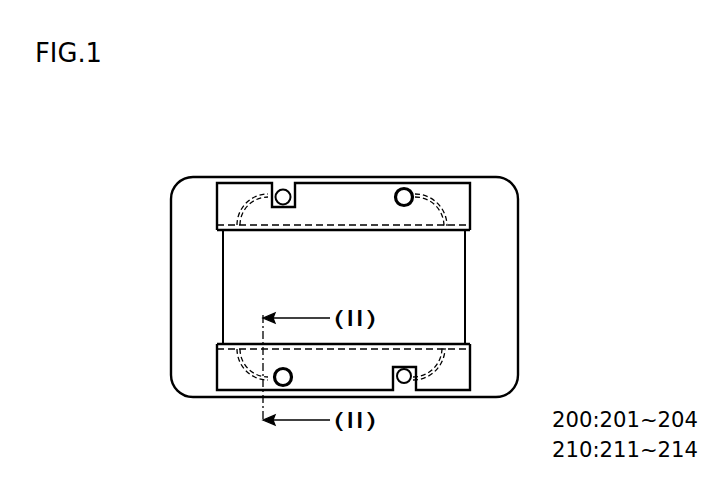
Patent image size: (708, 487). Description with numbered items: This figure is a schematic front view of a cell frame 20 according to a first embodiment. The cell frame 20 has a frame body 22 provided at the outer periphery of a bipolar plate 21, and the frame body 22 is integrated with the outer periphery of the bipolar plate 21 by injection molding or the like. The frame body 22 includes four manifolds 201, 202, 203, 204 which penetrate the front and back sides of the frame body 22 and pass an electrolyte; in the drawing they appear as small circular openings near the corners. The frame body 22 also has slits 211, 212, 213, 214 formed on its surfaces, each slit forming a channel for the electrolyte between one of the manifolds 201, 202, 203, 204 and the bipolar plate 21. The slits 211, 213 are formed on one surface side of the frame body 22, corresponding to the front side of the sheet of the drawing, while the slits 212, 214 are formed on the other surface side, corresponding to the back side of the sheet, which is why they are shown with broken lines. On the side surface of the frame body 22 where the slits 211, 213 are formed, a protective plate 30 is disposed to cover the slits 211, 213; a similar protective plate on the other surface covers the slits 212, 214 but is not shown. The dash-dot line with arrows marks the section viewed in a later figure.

The cell frame 20 is at (541, 214).
The bipolar plate 21 is at (248, 280).
The frame body 22 is at (178, 233).
The protective plate 30 is at (370, 188).
The manifold 201 is at (283, 386).
The manifold 202 is at (408, 386).
The manifold 203 is at (408, 187).
The manifold 204 is at (289, 188).
The slit 211 is at (243, 367).
The slit 212 is at (447, 358).
The slit 213 is at (447, 203).
The slit 214 is at (243, 205).